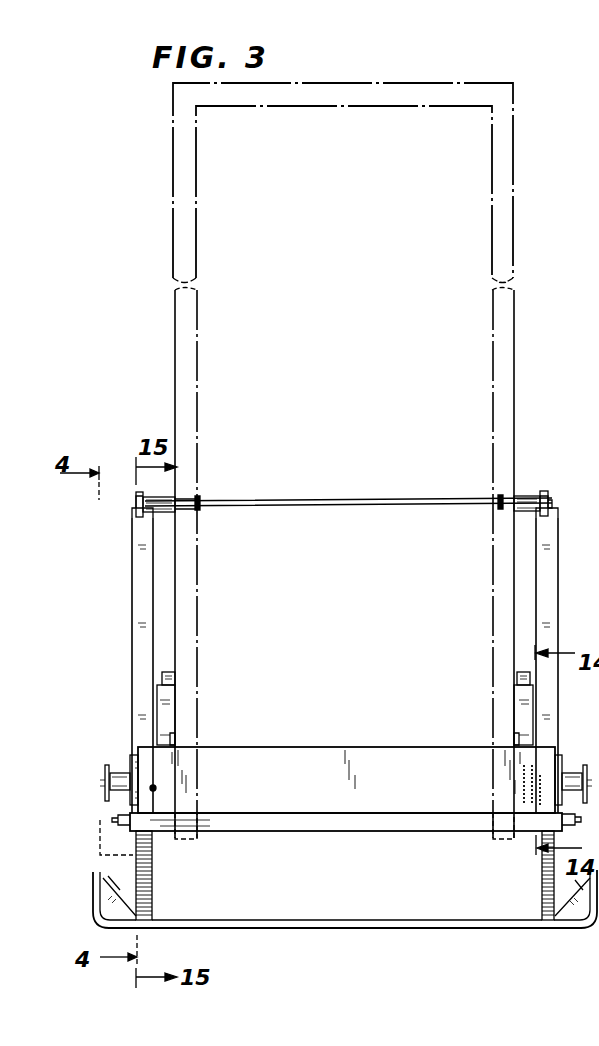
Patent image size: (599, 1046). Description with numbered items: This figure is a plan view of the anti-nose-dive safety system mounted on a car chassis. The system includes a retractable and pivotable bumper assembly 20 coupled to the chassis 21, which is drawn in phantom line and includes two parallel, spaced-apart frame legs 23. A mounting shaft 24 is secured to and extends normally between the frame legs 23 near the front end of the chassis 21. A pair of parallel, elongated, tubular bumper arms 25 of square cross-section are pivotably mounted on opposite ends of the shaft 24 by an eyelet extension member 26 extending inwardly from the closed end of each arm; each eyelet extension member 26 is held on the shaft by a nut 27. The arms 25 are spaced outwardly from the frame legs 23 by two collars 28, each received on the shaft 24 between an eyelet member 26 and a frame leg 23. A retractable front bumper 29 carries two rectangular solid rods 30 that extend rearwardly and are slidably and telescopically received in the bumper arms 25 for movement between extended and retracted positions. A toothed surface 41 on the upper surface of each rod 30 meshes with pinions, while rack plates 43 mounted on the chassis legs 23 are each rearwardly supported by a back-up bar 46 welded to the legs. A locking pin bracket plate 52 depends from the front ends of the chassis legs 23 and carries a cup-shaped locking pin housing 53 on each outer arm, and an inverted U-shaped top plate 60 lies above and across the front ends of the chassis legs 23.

The bumper assembly 20 is at (122, 703).
The chassis 21 is at (517, 340).
The frame legs 23 is at (197, 418).
The mounting shaft 24 is at (352, 502).
The bumper arms 25 is at (132, 591).
The eyelet extension member 26 is at (142, 498).
The nut 27 is at (130, 512).
The collars 28 is at (165, 512).
The front bumper 29 is at (346, 925).
The rods 30 is at (152, 897).
The toothed surface 41 is at (152, 862).
The rack plates 43 is at (170, 707).
The back-up bar 46 is at (175, 682).
The locking pin bracket plate 52 is at (352, 831).
The locking pin housing 53 is at (113, 818).
The top plate 60 is at (356, 750).